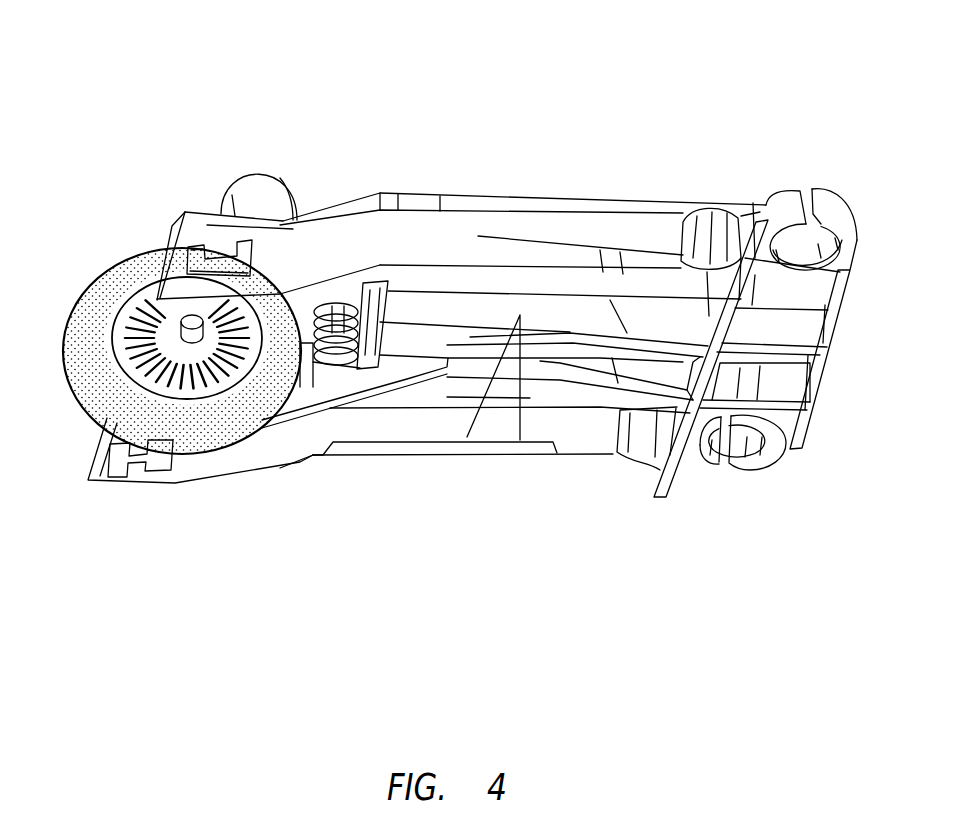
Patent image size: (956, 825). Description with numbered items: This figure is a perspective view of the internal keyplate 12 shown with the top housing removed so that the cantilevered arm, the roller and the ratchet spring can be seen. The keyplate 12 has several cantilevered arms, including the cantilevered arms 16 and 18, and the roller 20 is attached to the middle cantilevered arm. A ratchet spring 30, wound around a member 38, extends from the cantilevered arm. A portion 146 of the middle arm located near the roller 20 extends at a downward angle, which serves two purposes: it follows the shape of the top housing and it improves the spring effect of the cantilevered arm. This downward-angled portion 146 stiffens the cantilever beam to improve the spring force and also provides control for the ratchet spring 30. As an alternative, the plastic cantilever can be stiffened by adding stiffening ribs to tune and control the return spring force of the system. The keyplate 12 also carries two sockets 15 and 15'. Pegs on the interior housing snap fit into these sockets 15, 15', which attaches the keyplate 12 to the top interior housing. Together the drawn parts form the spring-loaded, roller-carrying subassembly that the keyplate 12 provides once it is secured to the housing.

The keyplate 12 is at (727, 93).
The socket 15 is at (823, 197).
The socket 15' is at (763, 475).
The cantilevered arm 16 is at (498, 438).
The cantilevered arm 18 is at (530, 237).
The roller 20 is at (103, 392).
The ratchet spring 30 is at (300, 317).
The member 38 is at (348, 313).
The portion of the arm 146 is at (332, 388).